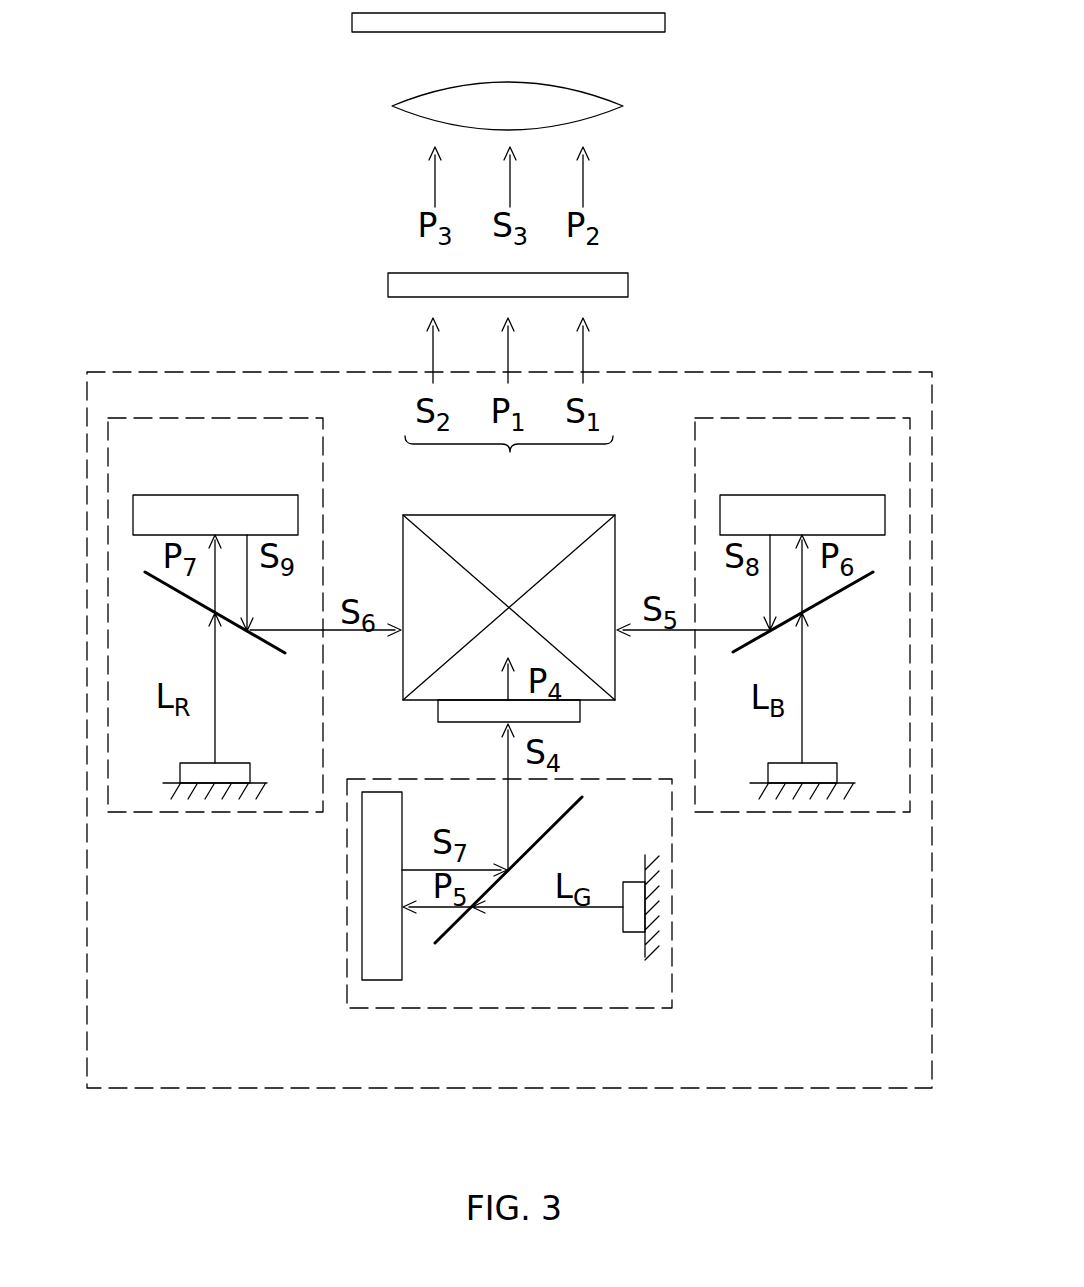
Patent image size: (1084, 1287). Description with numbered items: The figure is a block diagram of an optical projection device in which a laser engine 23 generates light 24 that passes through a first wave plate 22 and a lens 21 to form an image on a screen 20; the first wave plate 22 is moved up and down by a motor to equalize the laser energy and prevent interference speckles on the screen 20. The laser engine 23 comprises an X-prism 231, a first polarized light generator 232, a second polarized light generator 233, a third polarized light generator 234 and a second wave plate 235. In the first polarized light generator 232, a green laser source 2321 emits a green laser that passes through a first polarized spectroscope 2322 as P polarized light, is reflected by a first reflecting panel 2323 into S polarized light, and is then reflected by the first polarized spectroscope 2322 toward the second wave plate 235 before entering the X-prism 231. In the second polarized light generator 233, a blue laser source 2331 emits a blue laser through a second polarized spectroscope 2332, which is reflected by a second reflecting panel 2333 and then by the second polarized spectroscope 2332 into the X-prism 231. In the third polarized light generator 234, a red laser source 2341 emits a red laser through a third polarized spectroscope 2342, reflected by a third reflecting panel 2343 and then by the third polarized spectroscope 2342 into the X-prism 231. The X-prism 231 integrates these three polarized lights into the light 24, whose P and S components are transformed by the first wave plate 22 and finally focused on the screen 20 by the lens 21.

The screen 20 is at (665, 20).
The lens 21 is at (622, 104).
The first wave plate 22 is at (628, 283).
The laser engine 23 is at (150, 370).
The light 24 is at (509, 464).
The X-prism 231 is at (604, 515).
The first polarized light generator 232 is at (672, 933).
The second polarized light generator 233 is at (805, 812).
The third polarized light generator 234 is at (218, 812).
The second wave plate 235 is at (582, 712).
The green laser source 2321 is at (635, 932).
The first polarized spectroscope 2322 is at (457, 927).
The first reflecting panel 2323 is at (378, 980).
The blue laser source 2331 is at (830, 763).
The second polarized spectroscope 2332 is at (850, 587).
The second reflecting panel 2333 is at (800, 495).
The red laser source 2341 is at (243, 763).
The third polarized spectroscope 2342 is at (177, 588).
The third reflecting panel 2343 is at (215, 495).